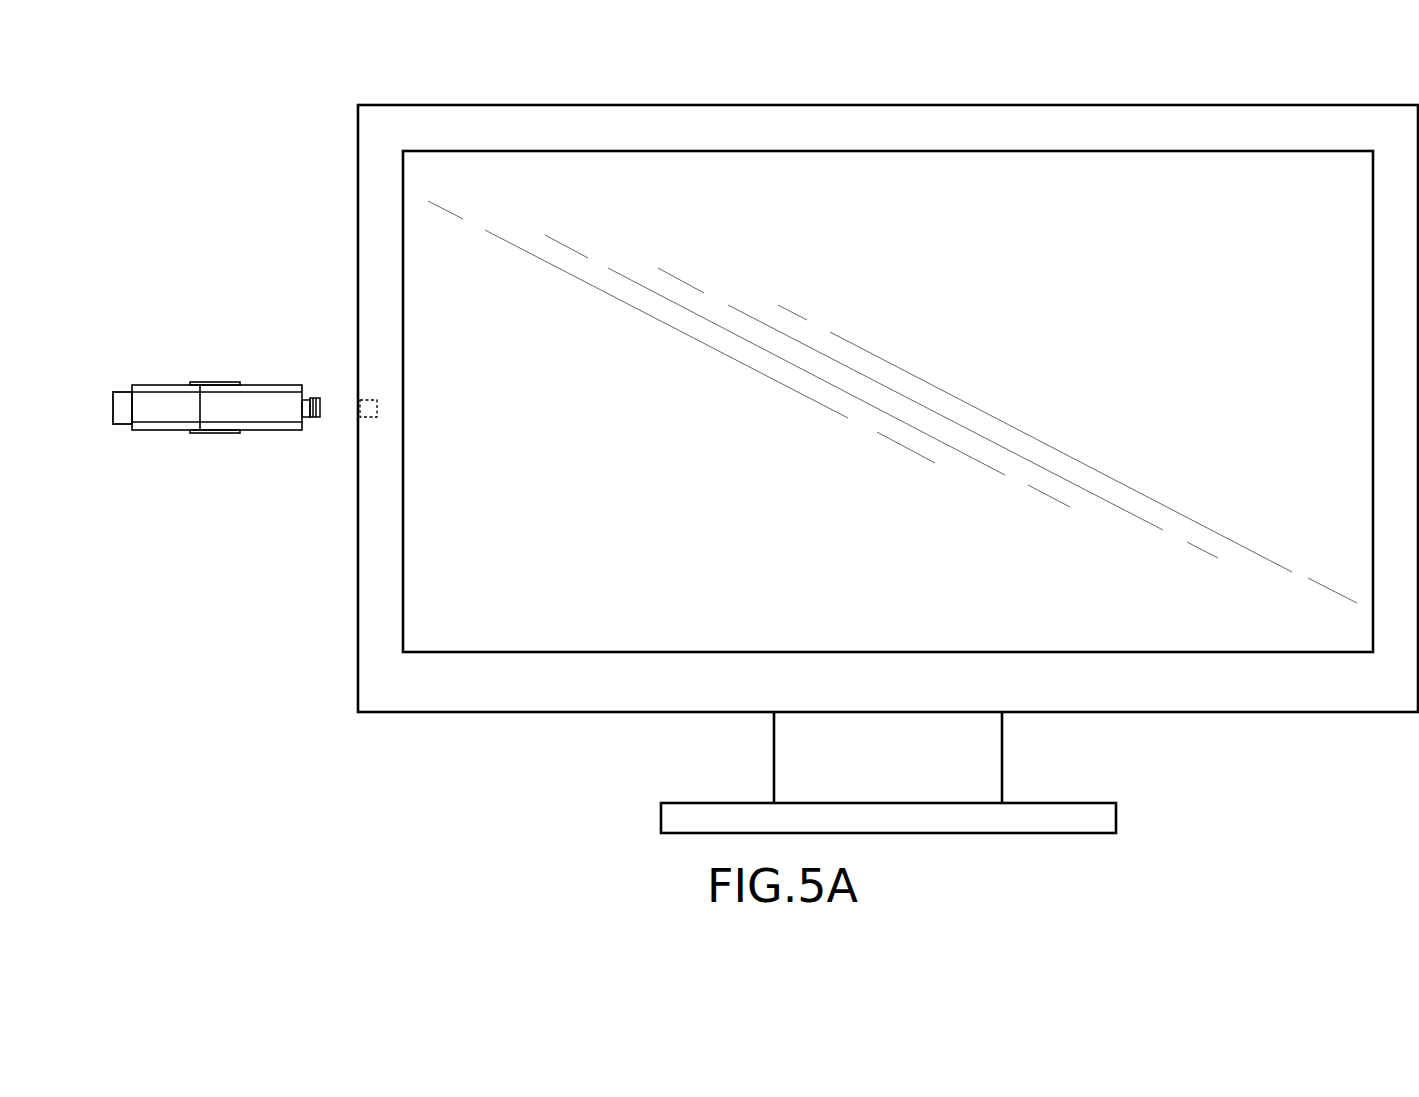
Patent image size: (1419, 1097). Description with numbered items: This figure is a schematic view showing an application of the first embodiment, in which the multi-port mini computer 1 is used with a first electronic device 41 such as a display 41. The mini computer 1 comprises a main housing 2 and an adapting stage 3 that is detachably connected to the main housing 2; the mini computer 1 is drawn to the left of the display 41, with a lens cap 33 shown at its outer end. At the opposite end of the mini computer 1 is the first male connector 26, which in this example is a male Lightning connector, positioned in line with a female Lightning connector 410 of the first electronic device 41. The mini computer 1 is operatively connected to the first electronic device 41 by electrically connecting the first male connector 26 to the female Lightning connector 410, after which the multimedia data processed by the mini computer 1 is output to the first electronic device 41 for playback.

The multi-port mini computer 1 is at (226, 407).
The main housing 2 is at (255, 413).
The adapting stage 3 is at (168, 414).
The lens cap 33 is at (121, 414).
The first male connector 26 is at (320, 417).
The first electronic device 41 is at (888, 105).
The female Lightning connector 410 is at (369, 400).